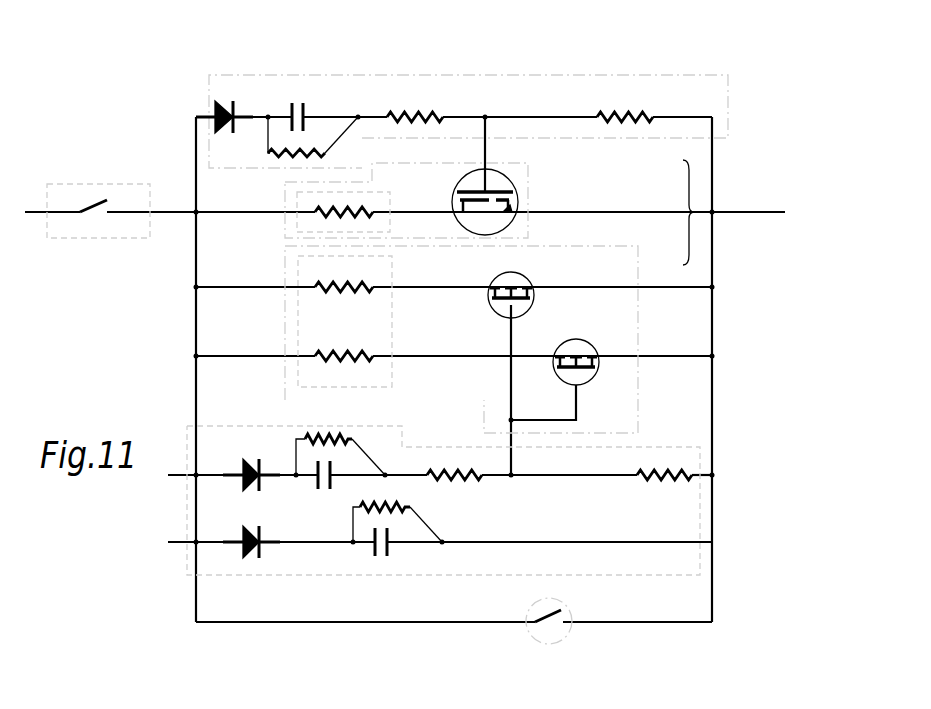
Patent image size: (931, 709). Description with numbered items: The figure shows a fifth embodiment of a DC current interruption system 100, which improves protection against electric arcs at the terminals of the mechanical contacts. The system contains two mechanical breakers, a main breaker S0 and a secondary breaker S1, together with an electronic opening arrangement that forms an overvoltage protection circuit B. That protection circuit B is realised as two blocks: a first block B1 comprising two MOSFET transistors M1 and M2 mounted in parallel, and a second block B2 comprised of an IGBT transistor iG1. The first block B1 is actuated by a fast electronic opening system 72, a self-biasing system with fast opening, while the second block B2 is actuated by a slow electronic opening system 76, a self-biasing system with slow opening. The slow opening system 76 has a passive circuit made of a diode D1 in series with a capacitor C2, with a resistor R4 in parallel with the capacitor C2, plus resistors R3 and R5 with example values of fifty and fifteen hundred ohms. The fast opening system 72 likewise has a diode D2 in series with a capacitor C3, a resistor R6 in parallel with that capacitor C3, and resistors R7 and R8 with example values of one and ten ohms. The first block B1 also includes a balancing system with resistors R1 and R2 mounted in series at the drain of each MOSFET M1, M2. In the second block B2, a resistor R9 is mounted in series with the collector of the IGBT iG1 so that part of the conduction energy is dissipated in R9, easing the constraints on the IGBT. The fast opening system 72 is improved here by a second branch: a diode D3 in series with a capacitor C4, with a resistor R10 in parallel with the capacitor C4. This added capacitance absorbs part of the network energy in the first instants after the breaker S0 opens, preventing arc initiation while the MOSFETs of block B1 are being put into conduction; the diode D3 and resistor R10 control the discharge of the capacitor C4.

The interruption system 100 is at (762, 122).
The second electronic opening system 76 is at (612, 75).
The first electronic opening system 72 is at (402, 577).
The overvoltage protection circuit B is at (692, 212).
The first block B1 is at (638, 262).
The second block B2 is at (530, 178).
The diode D1 is at (224, 107).
The diode D2 is at (246, 469).
The diode D3 is at (246, 536).
The capacitor C2 is at (312, 111).
The capacitor C3 is at (311, 479).
The capacitor C4 is at (367, 547).
The resistor R1 is at (344, 297).
The resistor R2 is at (345, 321).
The resistor R3 is at (429, 106).
The resistor R4 is at (313, 137).
The resistor R5 is at (636, 105).
The resistor R6 is at (340, 454).
The resistor R7 is at (454, 463).
The resistor R8 is at (664, 463).
The resistor R9 is at (343, 210).
The resistor R10 is at (397, 522).
The IGBT transistor iG1 is at (456, 192).
The MOSFET transistor M1 is at (505, 306).
The MOSFET transistor M2 is at (583, 376).
The mechanical breaker S0 is at (560, 645).
The secondary mechanical breaker S1 is at (88, 238).